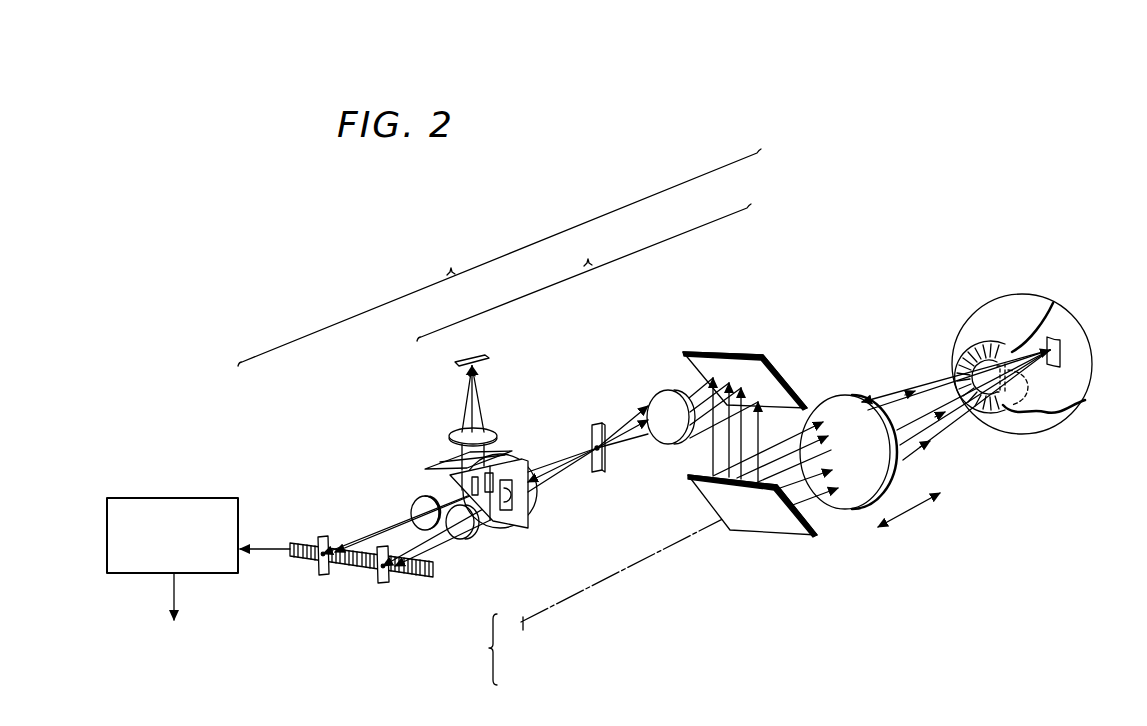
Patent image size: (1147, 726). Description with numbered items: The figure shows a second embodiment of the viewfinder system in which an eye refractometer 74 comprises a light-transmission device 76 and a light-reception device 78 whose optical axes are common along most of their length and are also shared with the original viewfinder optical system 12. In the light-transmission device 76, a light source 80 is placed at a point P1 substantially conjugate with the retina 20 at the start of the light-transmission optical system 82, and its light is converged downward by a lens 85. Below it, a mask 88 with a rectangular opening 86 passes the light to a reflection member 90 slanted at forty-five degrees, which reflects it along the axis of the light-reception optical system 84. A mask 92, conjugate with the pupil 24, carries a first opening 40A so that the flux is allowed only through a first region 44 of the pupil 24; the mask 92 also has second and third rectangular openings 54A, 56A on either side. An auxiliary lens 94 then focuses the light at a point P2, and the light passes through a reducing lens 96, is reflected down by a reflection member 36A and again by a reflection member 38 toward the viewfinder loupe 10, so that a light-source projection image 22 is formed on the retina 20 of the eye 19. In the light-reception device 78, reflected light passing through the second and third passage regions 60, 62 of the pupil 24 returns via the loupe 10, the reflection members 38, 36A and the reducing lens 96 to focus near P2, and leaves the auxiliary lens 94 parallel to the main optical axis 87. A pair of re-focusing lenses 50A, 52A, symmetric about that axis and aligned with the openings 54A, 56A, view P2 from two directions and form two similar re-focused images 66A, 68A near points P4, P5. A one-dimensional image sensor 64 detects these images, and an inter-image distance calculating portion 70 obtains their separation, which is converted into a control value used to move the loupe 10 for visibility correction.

The viewfinder loupe 10 is at (855, 503).
The original viewfinder optical system 12 is at (608, 595).
The eye 19 is at (1021, 295).
The retina 20 is at (1090, 362).
The light-source projection image 22 is at (1058, 340).
The pupil 24 is at (987, 345).
The reflection member 36A is at (793, 385).
The reflection member 38 is at (778, 530).
The first opening 40A is at (512, 462).
The first region 44 is at (998, 405).
The re-focusing lens 50A is at (412, 510).
The re-focusing lens 52A is at (462, 540).
The second opening 54A is at (432, 486).
The third opening 56A is at (514, 500).
The second passage region 60 is at (958, 388).
The third passage region 62 is at (1017, 405).
The one-dimensional image sensor 64 is at (412, 582).
The re-focused image 66A is at (322, 535).
The re-focused image 68A is at (383, 585).
The inter-image distance calculating portion 70 is at (173, 497).
The eye refractometer 74 is at (240, 432).
The light-transmission device 76 is at (584, 272).
The light-reception device 78 is at (499, 257).
The light source 80 is at (485, 357).
The light-transmission optical system 82 is at (562, 372).
The light-reception optical system 84 is at (612, 485).
The lens 85 is at (490, 430).
The rectangular opening 86 is at (455, 470).
The main optical axis 87 is at (690, 445).
The mask 88 is at (447, 470).
The reflection member 90 is at (440, 480).
The mask 92 is at (520, 527).
The auxiliary lens 94 is at (540, 495).
The reducing lens 96 is at (662, 392).
The point P1' P1 is at (462, 360).
The point P2' P2 is at (592, 440).
The point P4' P4 is at (311, 572).
The point P5' P5 is at (373, 575).